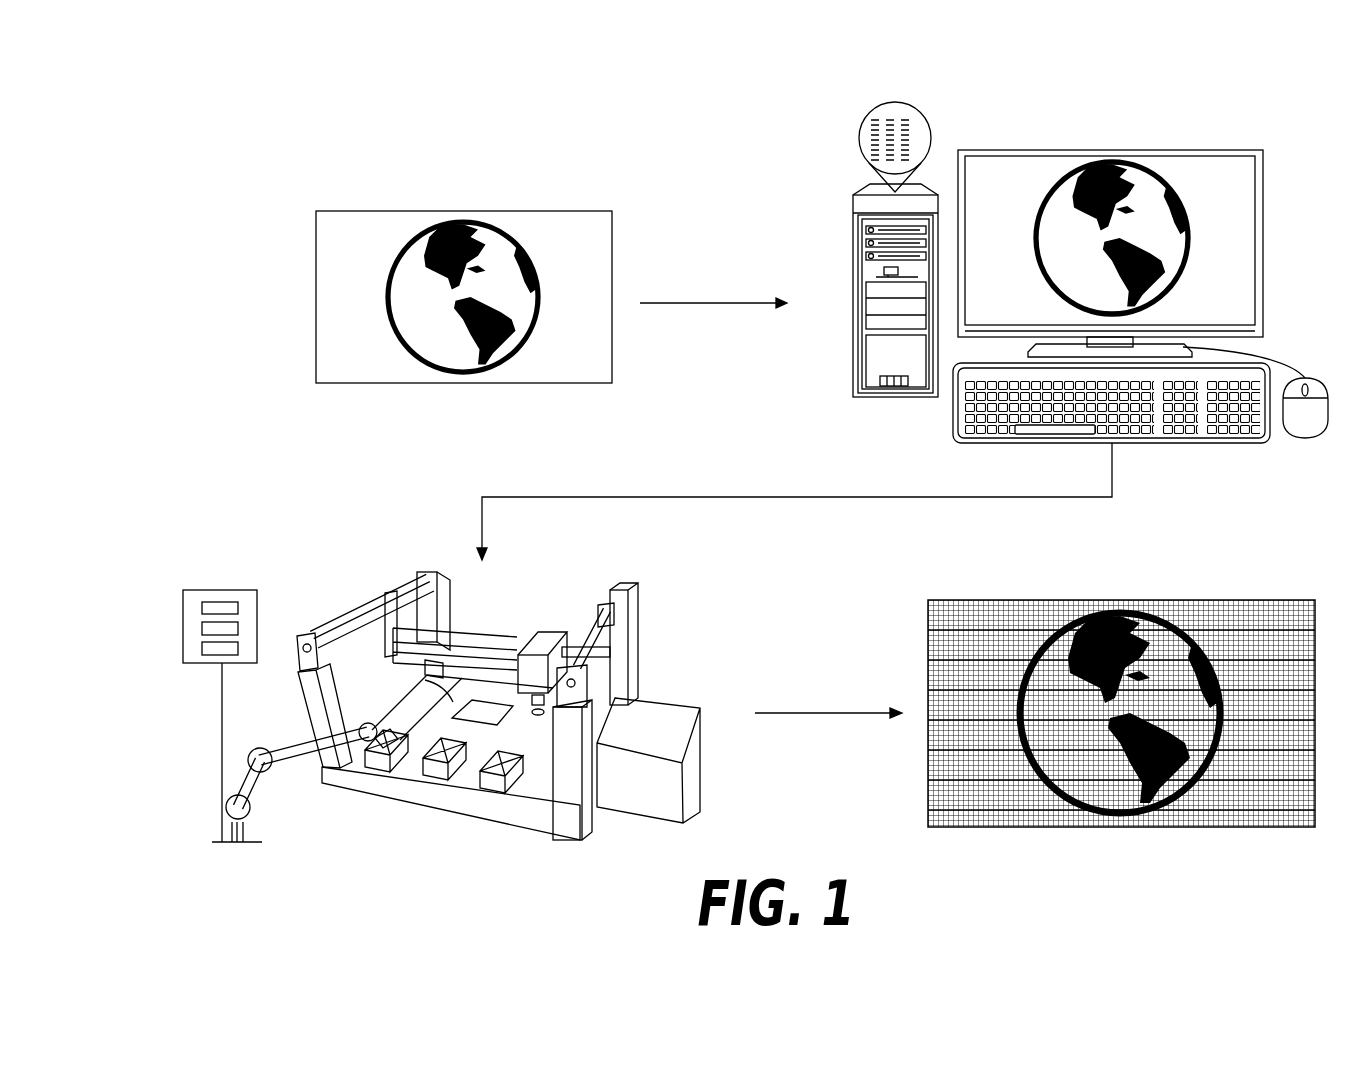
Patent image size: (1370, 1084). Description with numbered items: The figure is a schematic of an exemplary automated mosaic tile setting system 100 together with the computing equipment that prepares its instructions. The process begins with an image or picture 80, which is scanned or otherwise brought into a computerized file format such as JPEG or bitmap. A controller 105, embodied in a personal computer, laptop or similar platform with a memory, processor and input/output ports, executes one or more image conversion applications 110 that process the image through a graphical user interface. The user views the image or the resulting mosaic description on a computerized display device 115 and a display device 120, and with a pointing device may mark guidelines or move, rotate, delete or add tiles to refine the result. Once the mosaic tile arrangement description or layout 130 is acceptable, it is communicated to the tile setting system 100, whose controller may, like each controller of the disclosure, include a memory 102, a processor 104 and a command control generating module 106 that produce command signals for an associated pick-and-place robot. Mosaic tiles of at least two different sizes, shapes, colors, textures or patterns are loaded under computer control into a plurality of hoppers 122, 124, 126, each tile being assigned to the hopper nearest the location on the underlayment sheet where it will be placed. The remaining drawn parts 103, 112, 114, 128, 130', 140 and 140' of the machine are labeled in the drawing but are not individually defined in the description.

The image or picture 80 is at (404, 385).
The automated mosaic tile setting system 100 is at (642, 557).
The processor 102 is at (237, 607).
The material supply container 103 is at (670, 722).
The memory 104 is at (237, 628).
The controller 105 is at (853, 227).
The communication module 106 is at (237, 648).
The image conversion application 110 is at (862, 158).
The support pedestal 112 is at (537, 716).
The print head carriage 114 is at (545, 640).
The computerized display device 115 is at (719, 466).
The display device 120 is at (765, 466).
The hopper 122 is at (377, 770).
The hopper 124 is at (440, 780).
The hopper 126 is at (497, 793).
The build platform 128 is at (390, 693).
The mosaic tile arrangement description or layout 130 is at (736, 720).
The second sensor 130' is at (392, 609).
The sensor arm 140 is at (628, 636).
The second sensor arm 140' is at (369, 611).